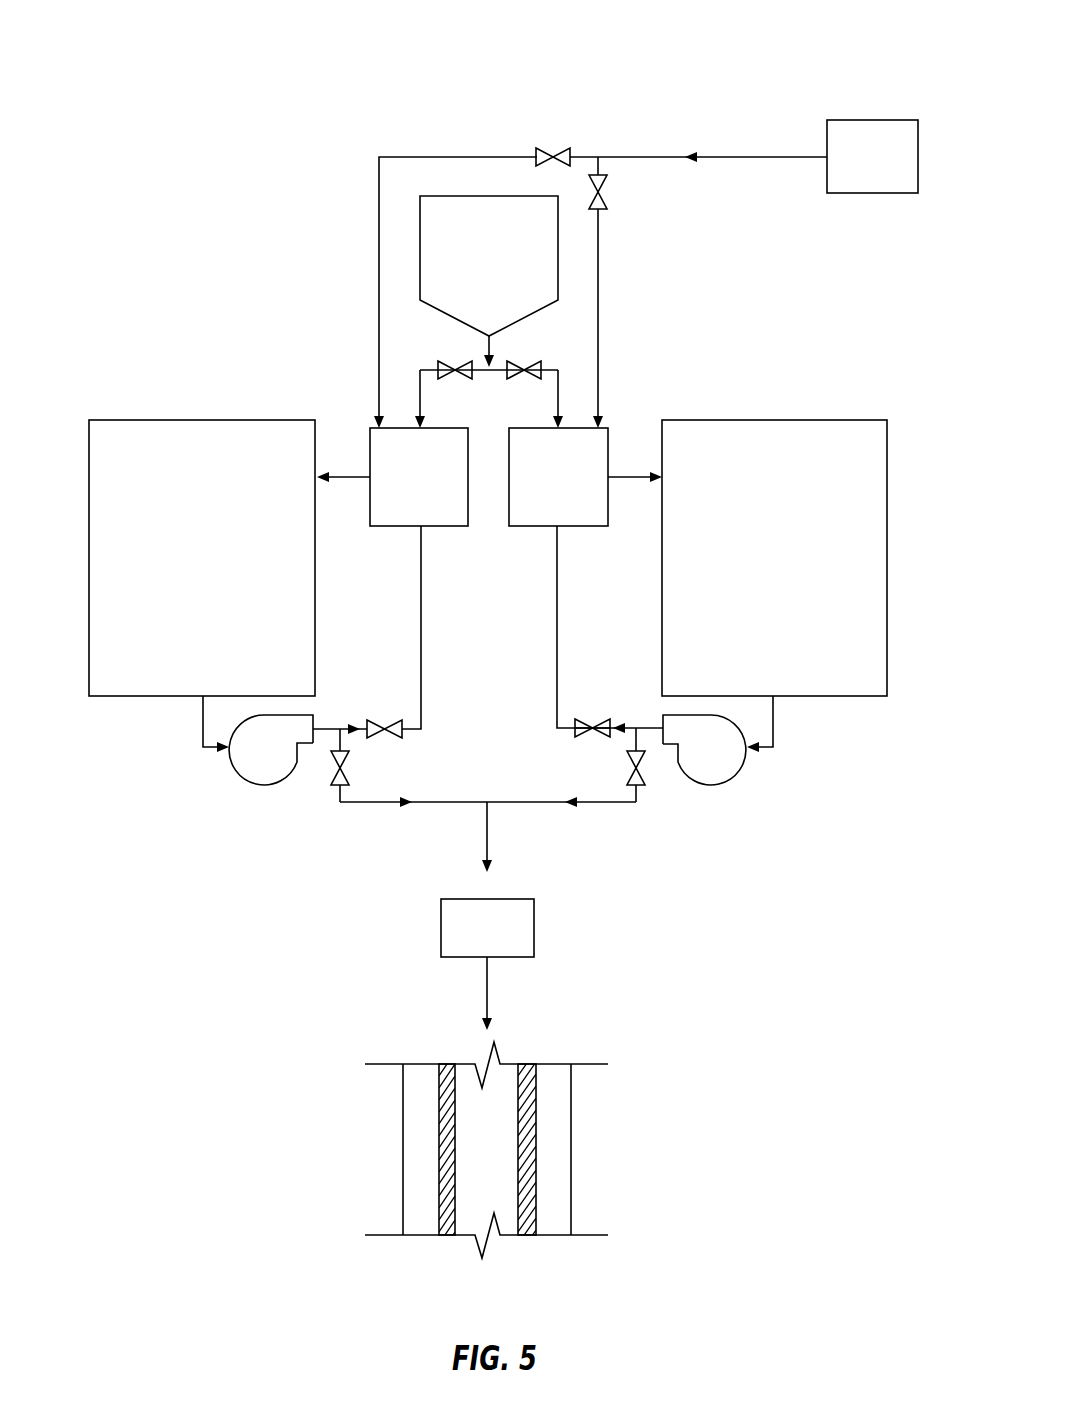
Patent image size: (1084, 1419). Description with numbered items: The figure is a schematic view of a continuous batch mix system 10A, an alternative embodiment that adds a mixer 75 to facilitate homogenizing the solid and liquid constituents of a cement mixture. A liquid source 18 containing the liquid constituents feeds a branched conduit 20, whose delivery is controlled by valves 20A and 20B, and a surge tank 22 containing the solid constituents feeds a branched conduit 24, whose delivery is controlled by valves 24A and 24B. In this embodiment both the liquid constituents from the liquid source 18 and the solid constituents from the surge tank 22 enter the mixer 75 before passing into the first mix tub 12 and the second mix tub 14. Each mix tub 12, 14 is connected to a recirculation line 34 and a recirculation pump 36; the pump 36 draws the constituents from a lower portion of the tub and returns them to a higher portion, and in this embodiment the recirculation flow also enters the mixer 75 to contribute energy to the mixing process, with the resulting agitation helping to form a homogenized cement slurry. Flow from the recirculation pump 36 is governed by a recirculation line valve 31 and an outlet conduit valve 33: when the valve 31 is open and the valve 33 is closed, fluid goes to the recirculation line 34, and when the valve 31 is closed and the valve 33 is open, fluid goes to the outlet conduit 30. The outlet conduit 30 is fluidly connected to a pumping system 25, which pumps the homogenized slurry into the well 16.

The continuous batch mix system 10A is at (809, 60).
The first mix tub 12 is at (151, 420).
The second mix tub 14 is at (832, 420).
The well 16 is at (565, 1052).
The liquid source 18 is at (872, 120).
The branched conduit 20 is at (661, 157).
The valve 20A is at (545, 150).
The valve 20B is at (607, 206).
The surge tank 22 is at (418, 253).
The branched conduit 24 is at (492, 348).
The valve 24A is at (462, 366).
The valve 24B is at (531, 374).
The pumping system 25 is at (534, 926).
The outlet conduit 30 is at (457, 803).
The recirculation line valve 31 is at (392, 722).
The outlet conduit valve 33 is at (347, 777).
The recirculation line 34 is at (423, 683).
The recirculation pump 36 is at (262, 785).
The mixer 75 is at (532, 526).